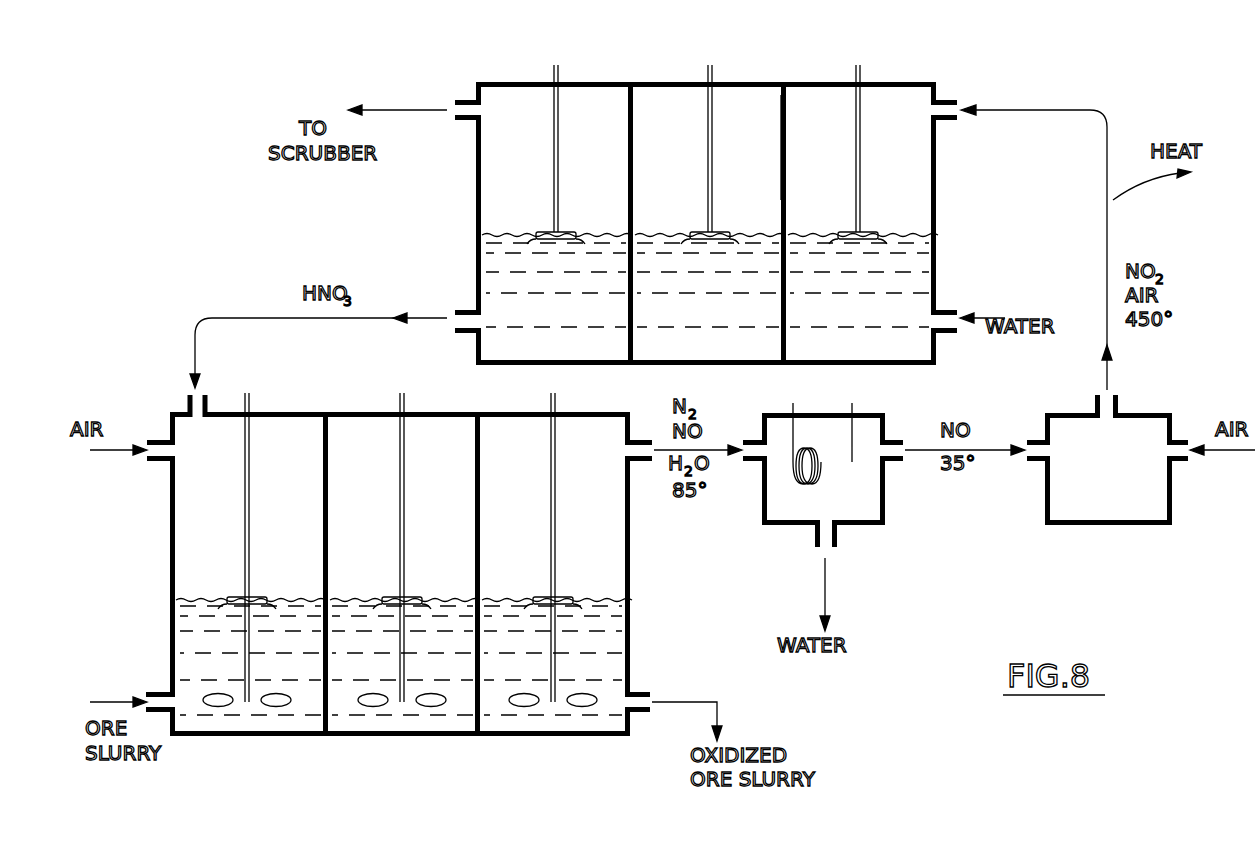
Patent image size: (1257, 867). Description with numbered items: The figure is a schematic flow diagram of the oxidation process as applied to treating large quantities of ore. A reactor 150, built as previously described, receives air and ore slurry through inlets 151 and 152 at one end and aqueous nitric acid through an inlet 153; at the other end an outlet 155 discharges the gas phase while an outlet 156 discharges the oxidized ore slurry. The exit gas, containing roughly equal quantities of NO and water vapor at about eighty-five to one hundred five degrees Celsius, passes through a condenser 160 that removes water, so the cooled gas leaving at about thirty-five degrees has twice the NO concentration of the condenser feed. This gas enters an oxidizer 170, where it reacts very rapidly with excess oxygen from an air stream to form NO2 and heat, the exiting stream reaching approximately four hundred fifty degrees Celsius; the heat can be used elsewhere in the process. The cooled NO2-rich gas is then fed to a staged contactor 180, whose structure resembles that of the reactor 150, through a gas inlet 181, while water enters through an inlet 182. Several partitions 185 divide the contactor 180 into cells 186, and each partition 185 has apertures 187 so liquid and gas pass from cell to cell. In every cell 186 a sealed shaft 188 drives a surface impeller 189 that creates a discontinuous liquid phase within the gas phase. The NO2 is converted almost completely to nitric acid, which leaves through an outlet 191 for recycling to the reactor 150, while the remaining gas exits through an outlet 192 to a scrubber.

The reactor 150 is at (396, 742).
The inlet 151 is at (160, 439).
The inlet 152 is at (156, 691).
The inlet 153 is at (208, 400).
The outlet 155 is at (643, 439).
The outlet 156 is at (648, 694).
The condenser 160 is at (873, 524).
The oxidizer 170 is at (1090, 526).
The staged contactor 180 is at (928, 365).
The inlet 181 is at (951, 105).
The inlet 182 is at (946, 307).
The partition 185 is at (786, 127).
The cell 186 is at (753, 135).
The aperture 187 is at (628, 163).
The sealed shaft 188 is at (705, 165).
The surface impeller 189 is at (700, 232).
The outlet 191 is at (459, 309).
The outlet 192 is at (457, 102).